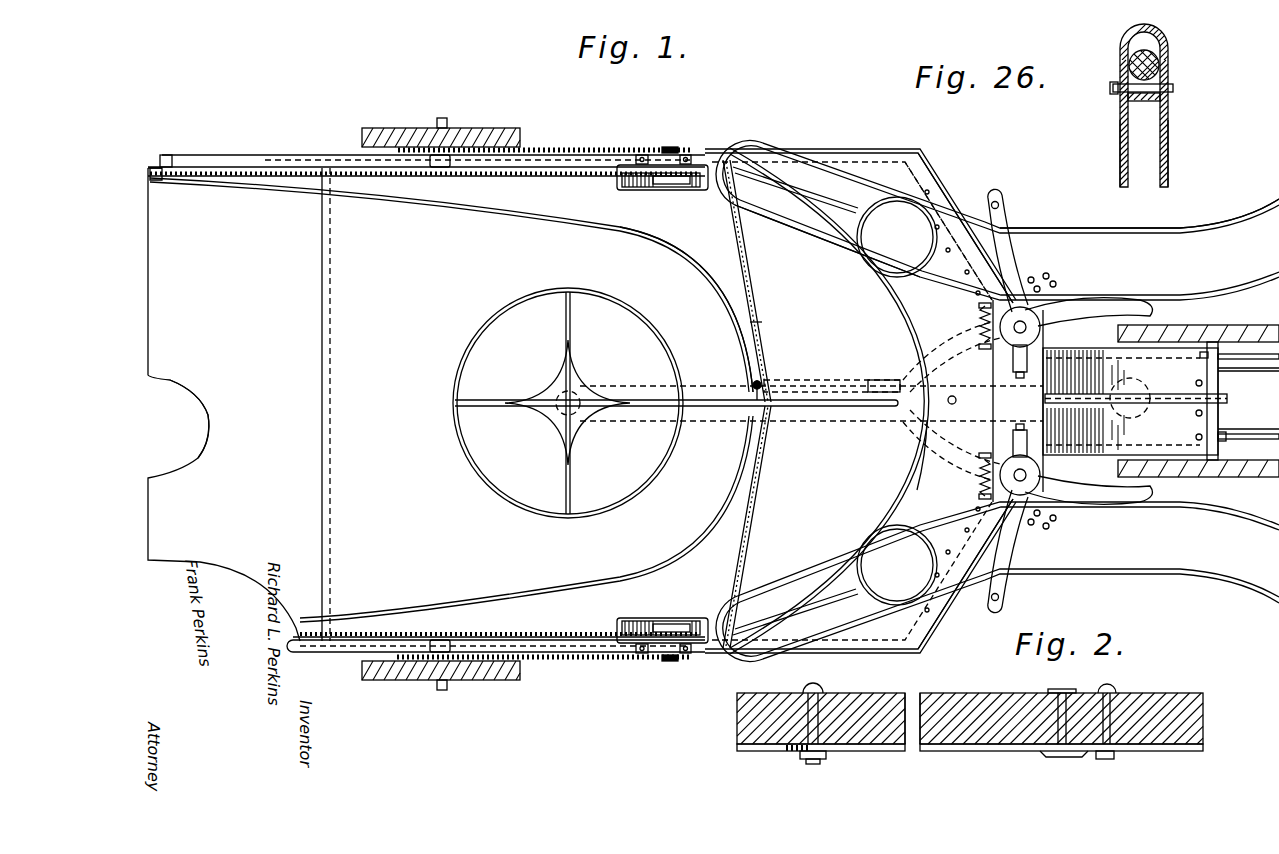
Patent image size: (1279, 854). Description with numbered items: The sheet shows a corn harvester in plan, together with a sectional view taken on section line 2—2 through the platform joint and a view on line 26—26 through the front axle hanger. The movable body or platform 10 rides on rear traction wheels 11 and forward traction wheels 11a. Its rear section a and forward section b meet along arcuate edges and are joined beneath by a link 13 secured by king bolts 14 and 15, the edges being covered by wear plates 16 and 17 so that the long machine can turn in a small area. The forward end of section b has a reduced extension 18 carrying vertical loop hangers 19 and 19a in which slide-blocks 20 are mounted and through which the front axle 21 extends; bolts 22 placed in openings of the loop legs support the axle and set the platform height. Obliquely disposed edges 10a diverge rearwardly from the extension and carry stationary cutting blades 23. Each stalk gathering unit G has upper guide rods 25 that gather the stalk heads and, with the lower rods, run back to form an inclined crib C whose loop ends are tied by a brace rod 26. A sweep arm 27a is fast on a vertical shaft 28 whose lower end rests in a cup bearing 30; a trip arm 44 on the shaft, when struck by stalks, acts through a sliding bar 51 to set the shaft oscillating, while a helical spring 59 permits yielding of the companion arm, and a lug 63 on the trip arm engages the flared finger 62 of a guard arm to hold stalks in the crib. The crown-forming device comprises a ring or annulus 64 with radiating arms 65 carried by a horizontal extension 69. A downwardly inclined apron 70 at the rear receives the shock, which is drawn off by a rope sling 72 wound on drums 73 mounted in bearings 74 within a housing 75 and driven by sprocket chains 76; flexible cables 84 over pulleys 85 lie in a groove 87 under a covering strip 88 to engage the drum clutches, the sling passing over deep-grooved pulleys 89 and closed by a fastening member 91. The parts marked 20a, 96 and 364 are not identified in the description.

In FIG. 1, the section line 2— 2 is at (966, 400).
In FIG. 1, the platform 10 is at (346, 404).
In FIG. 2, the platform 10 is at (905, 700).
In FIG. 1, the obliquely disposed edges 10a is at (928, 166).
In FIG. 1, the rear traction wheels 11 is at (418, 133).
In FIG. 1, the forward traction wheels 11a is at (1222, 480).
In FIG. 1, the link 13 is at (815, 423).
In FIG. 2, the link 13 is at (955, 752).
In FIG. 2, the king bolt 14 is at (1114, 690).
In FIG. 2, the king bolt 15 is at (825, 690).
In FIG. 2, the wear plate 16 is at (1055, 694).
In FIG. 1, the wear plate 17 is at (922, 463).
In FIG. 2, the wear plate 17 is at (1066, 757).
In FIG. 1, the reduced extension 18 is at (1130, 401).
In FIG. 1, the vertical loop hanger 19 is at (1225, 370).
In FIG. 26, the vertical loop hanger 19 is at (1168, 62).
In FIG. 1, the vertical loop hanger 19a is at (1222, 420).
In FIG. 26, the slide-block 20 is at (1162, 98).
In FIG. 26, the leg 20a is at (1162, 172).
In FIG. 1, the front axle 21 is at (1228, 438).
In FIG. 26, the front axle 21 is at (1132, 63).
In FIG. 1, the bolts 22 is at (1222, 353).
In FIG. 26, the bolts 22 is at (1174, 88).
In FIG. 1, the stationary cutting blade 23 is at (947, 208).
In FIG. 1, the upper guide rods 25 is at (1220, 230).
In FIG. 1, the brace rod 26 is at (1199, 355).
In FIG. 1, the sweep arm 27a is at (990, 198).
In FIG. 1, the vertical shaft 28 is at (1015, 328).
In FIG. 1, the cup bearing 30 is at (1170, 401).
In FIG. 1, the trip arm 44 is at (1022, 262).
In FIG. 1, the sliding bar 51 is at (1017, 374).
In FIG. 1, the helical spring 59 is at (978, 323).
In FIG. 1, the finger 62 is at (913, 292).
In FIG. 1, the lug 63 is at (1002, 205).
In FIG. 1, the ring 64 is at (520, 508).
In FIG. 1, the radiating arms 65 is at (565, 332).
In FIG. 1, the horizontal extension 69 is at (730, 407).
In FIG. 1, the apron 70 is at (224, 404).
In FIG. 1, the rope sling 72 is at (452, 207).
In FIG. 1, the drum 73 is at (697, 192).
In FIG. 1, the bearings 74 is at (680, 150).
In FIG. 1, the housing 75 is at (620, 190).
In FIG. 1, the sprocket chain 76 is at (565, 148).
In FIG. 1, the flexible cables 84 is at (762, 322).
In FIG. 1, the pulleys 85 is at (774, 372).
In FIG. 1, the groove 87 is at (745, 268).
In FIG. 1, the covering strip 88 is at (740, 268).
In FIG. 1, the deep-grooved pulleys 89 is at (156, 182).
In FIG. 1, the fastening member 91 is at (742, 372).
In FIG. 1, the rivet 96 is at (946, 251).
In FIG. 1, the notch 364 is at (189, 419).
In FIG. 1, the rear section a is at (603, 163).
In FIG. 2, the rear section a is at (760, 692).
In FIG. 1, the forward section b is at (905, 150).
In FIG. 2, the forward section b is at (1185, 692).
In FIG. 1, the crib C is at (810, 230).
In FIG. 1, the stalk gathering unit G is at (1157, 560).